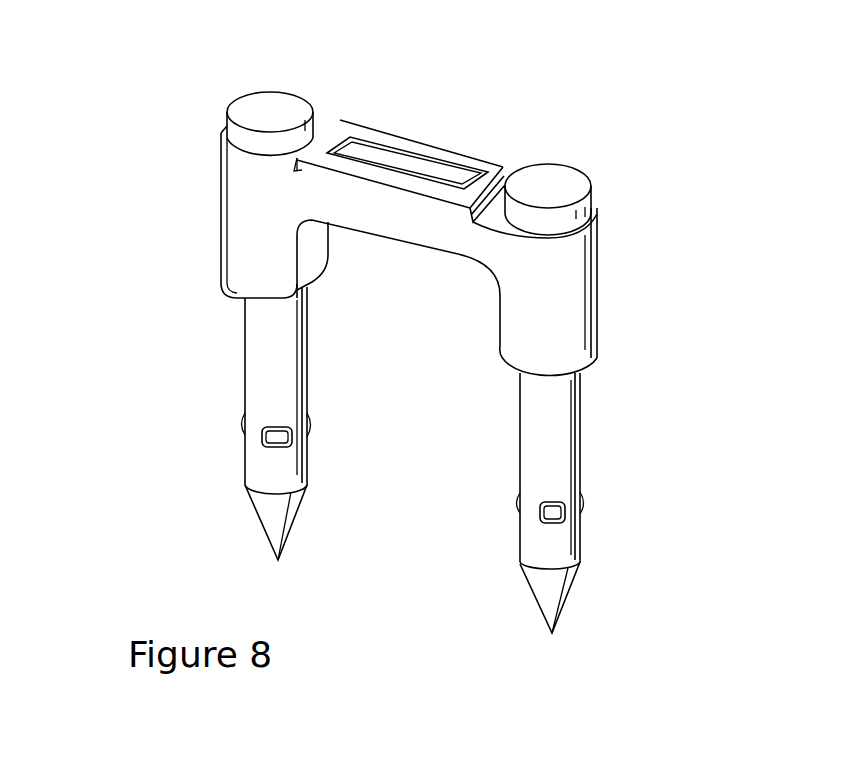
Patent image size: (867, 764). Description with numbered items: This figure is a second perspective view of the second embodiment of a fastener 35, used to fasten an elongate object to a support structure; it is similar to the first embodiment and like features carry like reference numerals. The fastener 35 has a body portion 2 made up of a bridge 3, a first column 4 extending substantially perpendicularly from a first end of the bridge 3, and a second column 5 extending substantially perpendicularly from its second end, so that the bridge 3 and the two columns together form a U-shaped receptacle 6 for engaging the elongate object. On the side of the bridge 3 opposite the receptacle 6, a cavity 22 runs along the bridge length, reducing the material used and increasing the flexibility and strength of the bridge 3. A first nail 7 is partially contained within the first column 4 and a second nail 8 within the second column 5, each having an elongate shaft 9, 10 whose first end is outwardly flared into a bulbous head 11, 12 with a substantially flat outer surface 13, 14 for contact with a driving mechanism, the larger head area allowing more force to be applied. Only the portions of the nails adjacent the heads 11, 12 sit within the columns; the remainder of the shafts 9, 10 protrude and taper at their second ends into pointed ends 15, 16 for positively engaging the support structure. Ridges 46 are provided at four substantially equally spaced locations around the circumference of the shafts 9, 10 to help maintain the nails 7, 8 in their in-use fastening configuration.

The fastener 35 is at (134, 75).
The body portion 2 is at (470, 135).
The bridge 3 is at (358, 218).
The cavity 22 is at (364, 150).
The U-shaped receptacle 6 is at (441, 330).
The first nail 7 is at (222, 390).
The second nail 8 is at (600, 422).
The first column 4 is at (237, 204).
The second column 5 is at (570, 297).
The elongate shaft 9 is at (262, 333).
The elongate shaft 10 is at (563, 472).
The bulbous head 11 is at (257, 147).
The bulbous head 12 is at (590, 209).
The flat outer surface 13 is at (274, 117).
The flat outer surface 14 is at (558, 182).
The pointed end 15 is at (272, 511).
The pointed end 16 is at (553, 587).
The ridges 46 is at (273, 436).